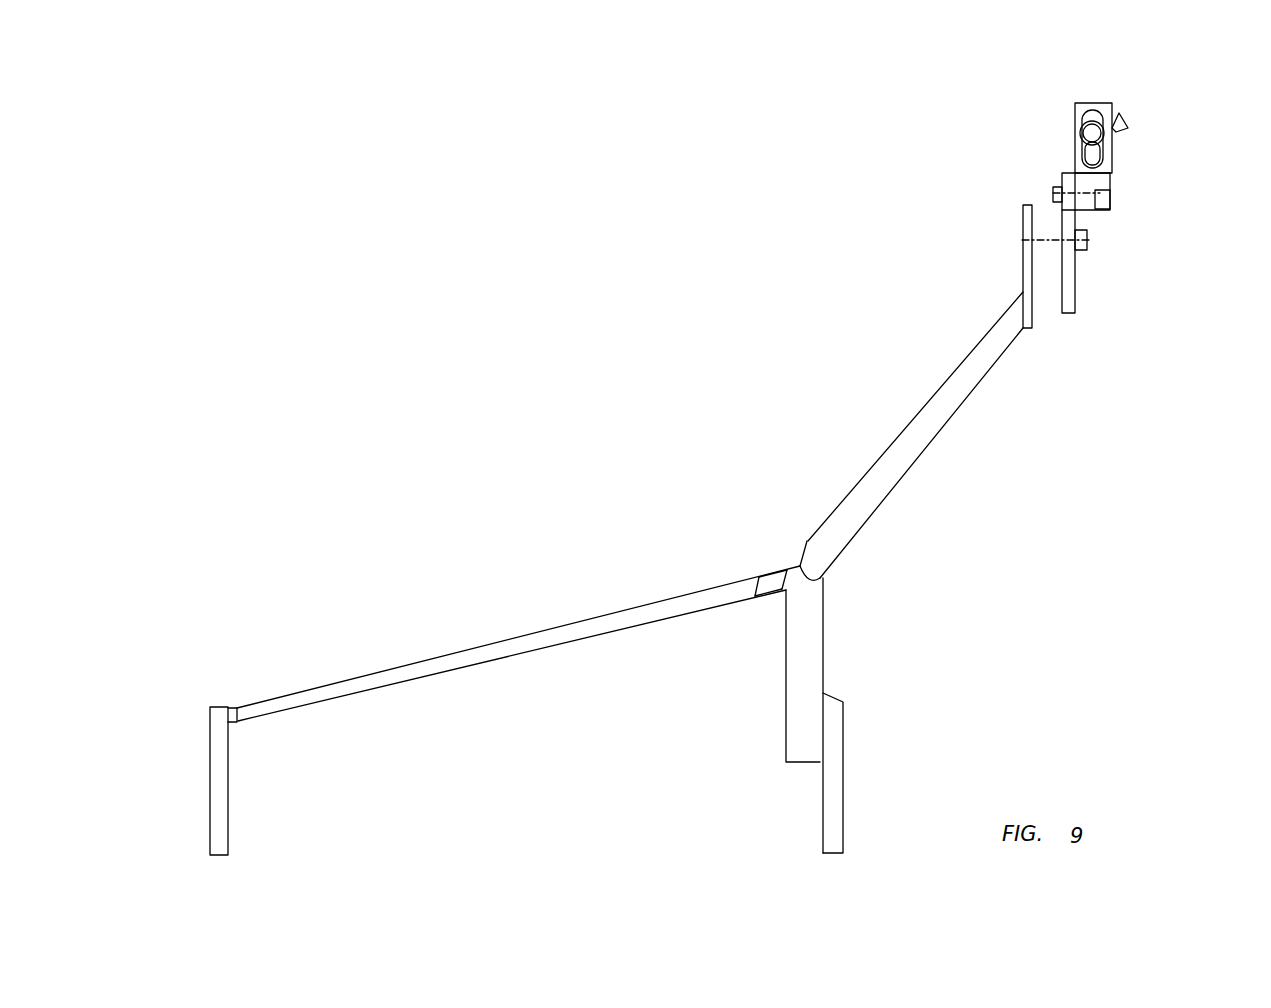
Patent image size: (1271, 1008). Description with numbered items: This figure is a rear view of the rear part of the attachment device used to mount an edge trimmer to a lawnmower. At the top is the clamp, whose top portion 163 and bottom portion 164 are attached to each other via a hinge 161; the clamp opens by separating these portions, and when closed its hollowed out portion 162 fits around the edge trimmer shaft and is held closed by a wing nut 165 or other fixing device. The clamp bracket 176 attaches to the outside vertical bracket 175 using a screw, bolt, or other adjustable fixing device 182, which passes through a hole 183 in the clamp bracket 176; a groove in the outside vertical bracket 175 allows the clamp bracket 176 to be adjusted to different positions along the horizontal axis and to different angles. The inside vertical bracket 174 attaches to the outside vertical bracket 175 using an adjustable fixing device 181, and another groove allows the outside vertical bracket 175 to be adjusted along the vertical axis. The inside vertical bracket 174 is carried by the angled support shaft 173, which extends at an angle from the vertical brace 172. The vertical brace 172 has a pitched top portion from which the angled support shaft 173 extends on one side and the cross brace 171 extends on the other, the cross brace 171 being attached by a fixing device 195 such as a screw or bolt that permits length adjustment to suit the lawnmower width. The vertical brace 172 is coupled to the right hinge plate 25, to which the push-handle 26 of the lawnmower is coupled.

The right hinge plate 25 is at (845, 772).
The push-handle 26 is at (210, 787).
The hinge 161 is at (1075, 130).
The hollowed out portion 162 is at (1087, 102).
The top portion 163 is at (1105, 103).
The bottom portion 164 is at (1113, 160).
The wing nut 165 is at (1128, 121).
The cross brace 171 is at (473, 648).
The vertical brace 172 is at (826, 636).
The angled support shaft 173 is at (905, 430).
The inside vertical bracket 174 is at (1023, 268).
The outside vertical bracket 175 is at (1076, 283).
The clamp bracket 176 is at (1110, 200).
The adjustable fixing device 181 is at (1087, 243).
The adjustable fixing device 182 is at (1053, 194).
The hole 183 is at (1100, 210).
The fixing device 195 is at (773, 578).